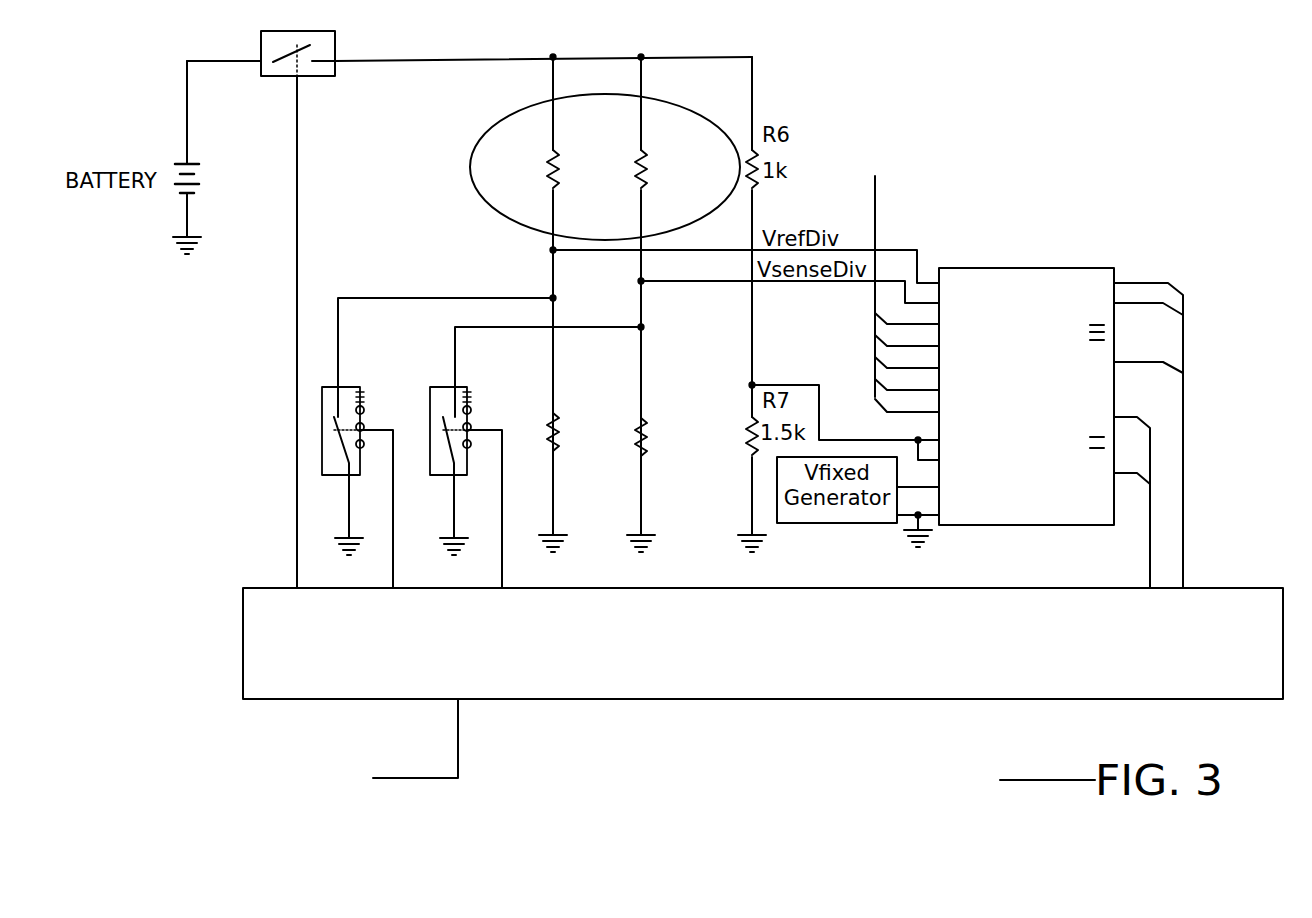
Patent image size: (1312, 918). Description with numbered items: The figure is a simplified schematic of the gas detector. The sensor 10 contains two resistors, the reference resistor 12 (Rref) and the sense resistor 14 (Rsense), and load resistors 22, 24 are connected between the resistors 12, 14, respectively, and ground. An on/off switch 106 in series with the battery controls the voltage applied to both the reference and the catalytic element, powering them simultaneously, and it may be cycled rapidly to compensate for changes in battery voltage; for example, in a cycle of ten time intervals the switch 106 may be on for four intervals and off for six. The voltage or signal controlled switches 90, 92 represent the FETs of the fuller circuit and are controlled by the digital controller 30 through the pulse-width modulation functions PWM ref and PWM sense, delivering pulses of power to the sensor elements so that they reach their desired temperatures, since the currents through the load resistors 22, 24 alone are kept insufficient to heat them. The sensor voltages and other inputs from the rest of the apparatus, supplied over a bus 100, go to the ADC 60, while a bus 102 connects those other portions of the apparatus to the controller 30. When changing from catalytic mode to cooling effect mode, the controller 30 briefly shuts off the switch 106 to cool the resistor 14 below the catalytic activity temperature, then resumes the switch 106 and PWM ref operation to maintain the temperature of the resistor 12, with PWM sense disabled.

The on/off switch 106 is at (335, 44).
The sensor 10 is at (565, 304).
The resistor Rref 12 is at (560, 170).
The resistor Rsense 14 is at (645, 168).
The bus 100 is at (875, 205).
The ADC 60 is at (993, 268).
The switch 92 is at (323, 387).
The switch 90 is at (433, 387).
The load resistor 22 is at (552, 440).
The load resistor 24 is at (647, 422).
The digital controller 30 is at (763, 700).
The bus 102 is at (458, 745).